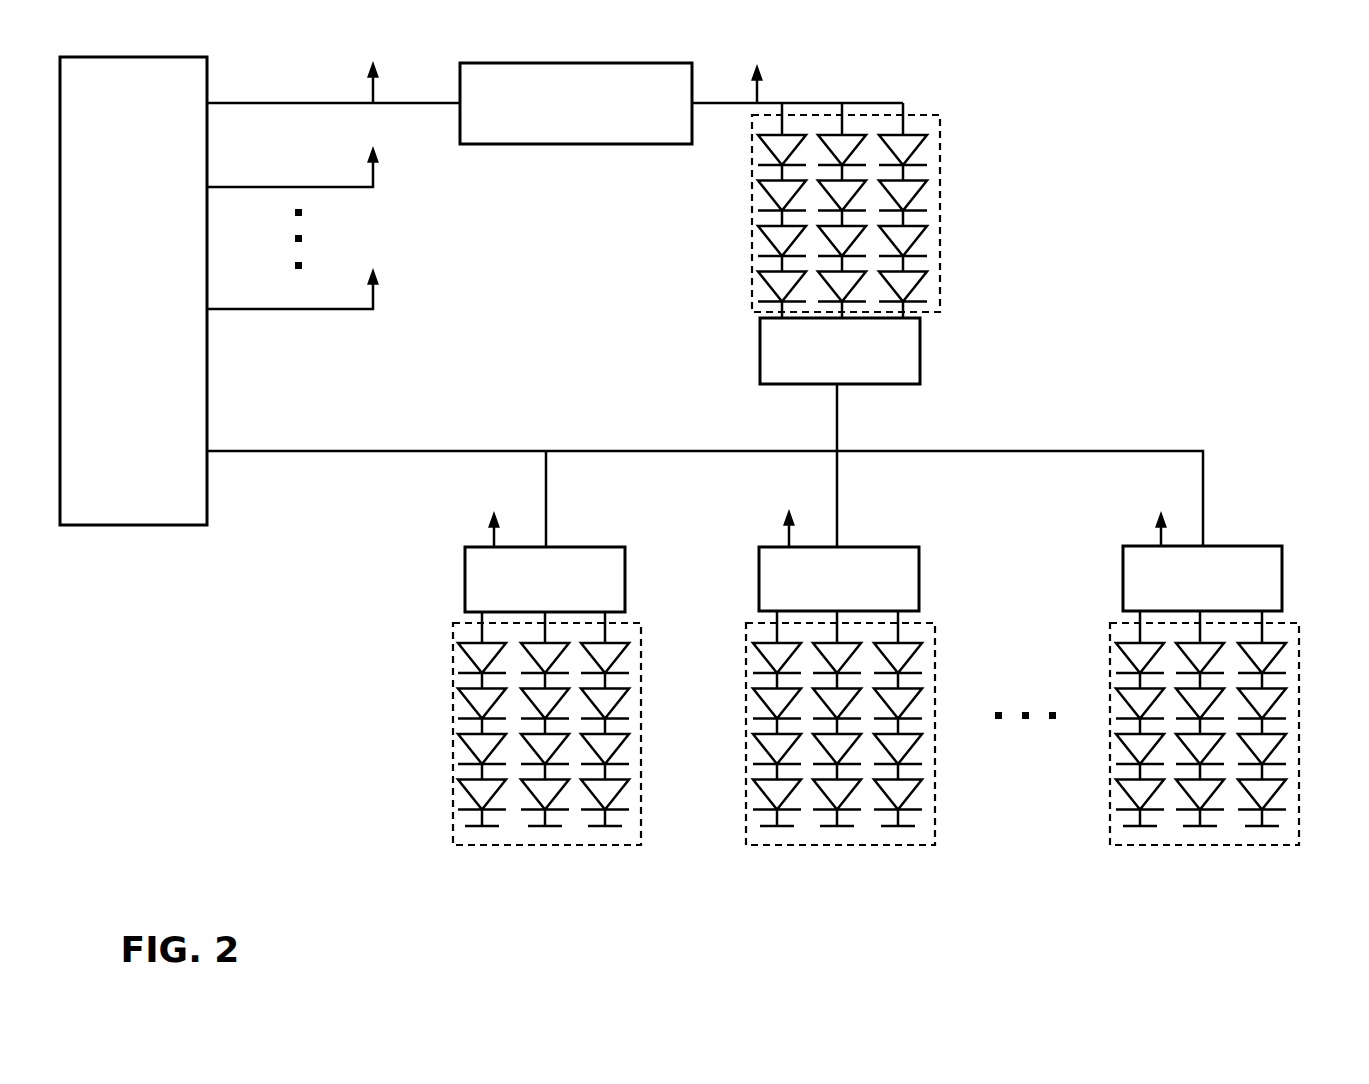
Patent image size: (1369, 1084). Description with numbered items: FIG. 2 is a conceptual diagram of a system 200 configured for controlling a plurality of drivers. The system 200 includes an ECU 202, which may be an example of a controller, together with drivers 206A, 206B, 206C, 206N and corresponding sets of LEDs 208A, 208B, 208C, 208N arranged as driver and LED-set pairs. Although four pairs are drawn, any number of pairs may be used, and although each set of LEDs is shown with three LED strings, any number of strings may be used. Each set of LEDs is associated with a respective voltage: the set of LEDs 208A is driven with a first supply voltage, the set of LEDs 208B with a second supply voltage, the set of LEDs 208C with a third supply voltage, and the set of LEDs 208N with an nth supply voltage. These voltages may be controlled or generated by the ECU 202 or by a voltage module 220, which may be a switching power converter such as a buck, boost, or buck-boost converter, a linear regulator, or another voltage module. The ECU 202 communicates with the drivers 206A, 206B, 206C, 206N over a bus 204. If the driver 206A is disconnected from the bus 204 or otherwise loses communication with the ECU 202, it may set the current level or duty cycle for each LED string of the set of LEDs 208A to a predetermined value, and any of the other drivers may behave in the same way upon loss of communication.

The system 200 is at (1213, 95).
The ECU 202 is at (133, 291).
The bus 204 is at (1145, 453).
The driver 206A is at (840, 351).
The driver 206B is at (545, 579).
The driver 206C is at (839, 579).
The driver 206N is at (1202, 578).
The set of LEDs 208A is at (940, 116).
The set of LEDs 208B is at (641, 624).
The set of LEDs 208C is at (935, 624).
The set of LEDs 208N is at (1299, 624).
The voltage module 220 is at (576, 103).